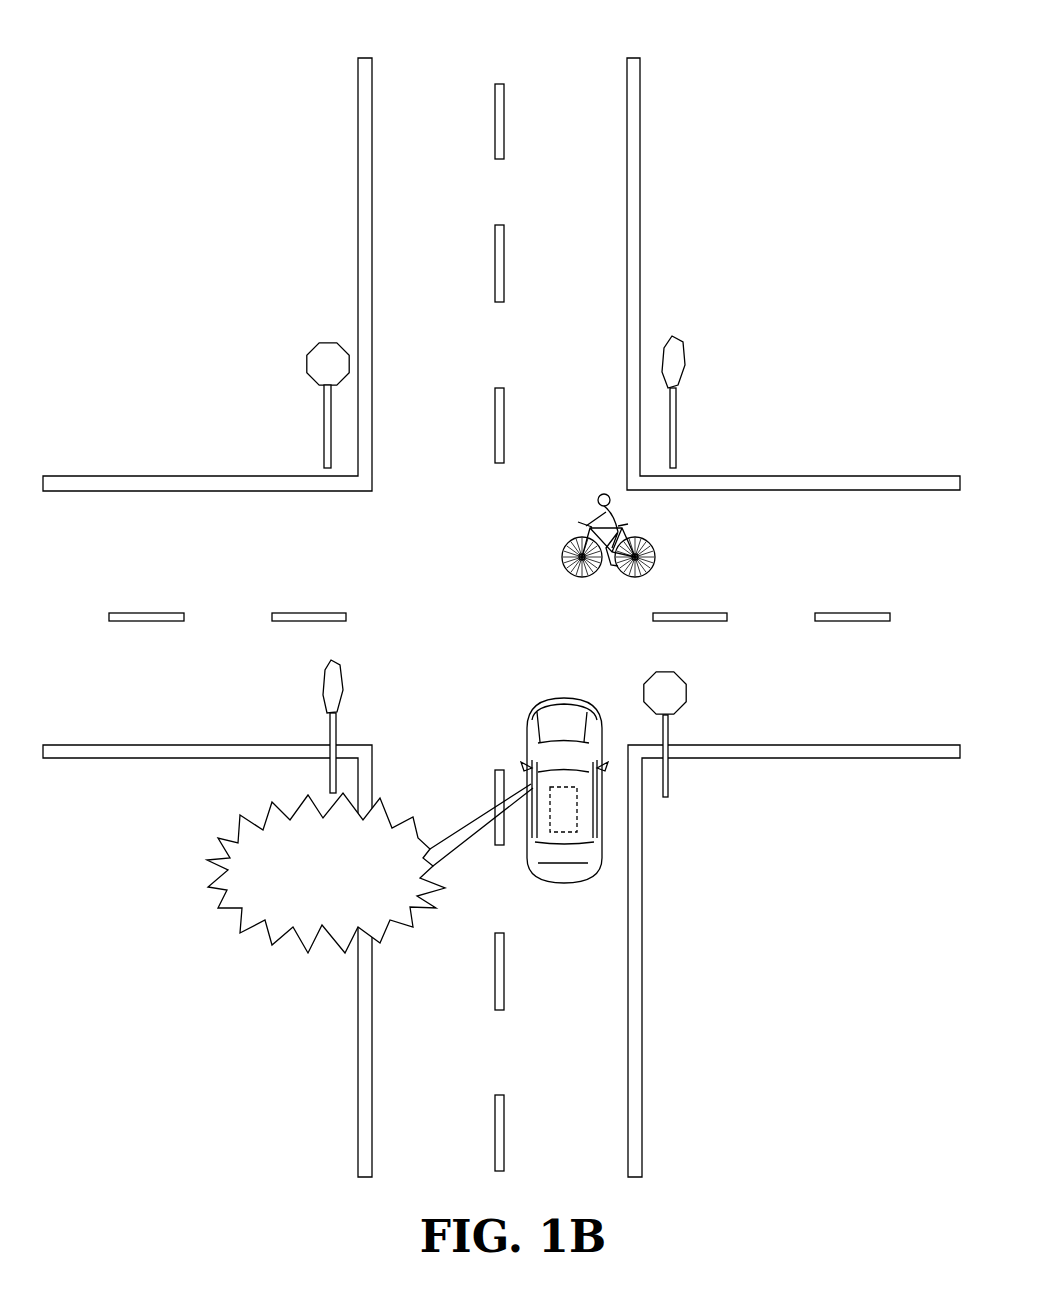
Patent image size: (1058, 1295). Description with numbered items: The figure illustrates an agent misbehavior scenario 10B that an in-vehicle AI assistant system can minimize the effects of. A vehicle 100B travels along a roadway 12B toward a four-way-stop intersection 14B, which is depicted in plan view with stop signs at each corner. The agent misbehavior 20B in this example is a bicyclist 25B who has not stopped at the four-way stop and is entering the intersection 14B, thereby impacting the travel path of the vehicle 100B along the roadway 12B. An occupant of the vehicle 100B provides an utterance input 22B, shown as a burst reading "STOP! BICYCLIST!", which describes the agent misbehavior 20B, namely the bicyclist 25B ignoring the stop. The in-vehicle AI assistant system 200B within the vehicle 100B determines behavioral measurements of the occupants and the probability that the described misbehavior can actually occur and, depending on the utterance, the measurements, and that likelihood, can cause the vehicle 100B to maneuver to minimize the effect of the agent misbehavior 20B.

The intersection scenario 10B is at (501, 588).
The roadway 12B is at (580, 262).
The intersection 14B is at (461, 606).
The agent misbehavior 20B is at (670, 502).
The utterance input 22B is at (238, 832).
The bicyclist 25B is at (618, 521).
The vehicle 100B is at (624, 794).
The in-vehicle AI assistant system 200B is at (577, 810).